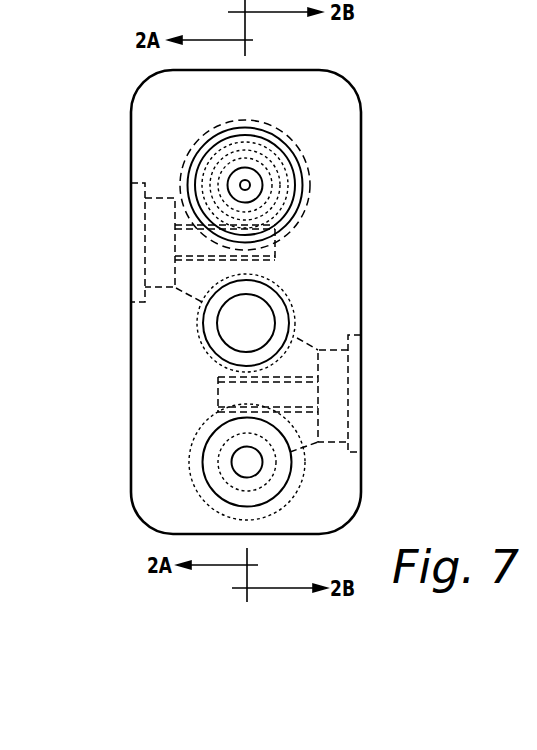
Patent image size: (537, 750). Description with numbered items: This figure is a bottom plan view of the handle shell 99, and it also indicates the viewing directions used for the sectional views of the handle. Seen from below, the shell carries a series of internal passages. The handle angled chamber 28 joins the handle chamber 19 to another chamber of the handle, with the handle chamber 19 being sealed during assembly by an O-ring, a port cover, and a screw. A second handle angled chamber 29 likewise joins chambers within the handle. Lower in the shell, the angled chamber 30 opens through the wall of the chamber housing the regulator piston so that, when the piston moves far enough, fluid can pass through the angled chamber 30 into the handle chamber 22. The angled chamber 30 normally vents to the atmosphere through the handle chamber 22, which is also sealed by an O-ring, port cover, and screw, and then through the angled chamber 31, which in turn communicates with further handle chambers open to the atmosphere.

The handle shell 99 is at (394, 151).
The handle angled chamber 28 is at (226, 184).
The handle angled chamber 29 is at (188, 297).
The angled chamber 30 is at (312, 335).
The angled chamber 31 is at (310, 443).
The handle chamber 19 is at (157, 241).
The handle chamber 22 is at (333, 388).